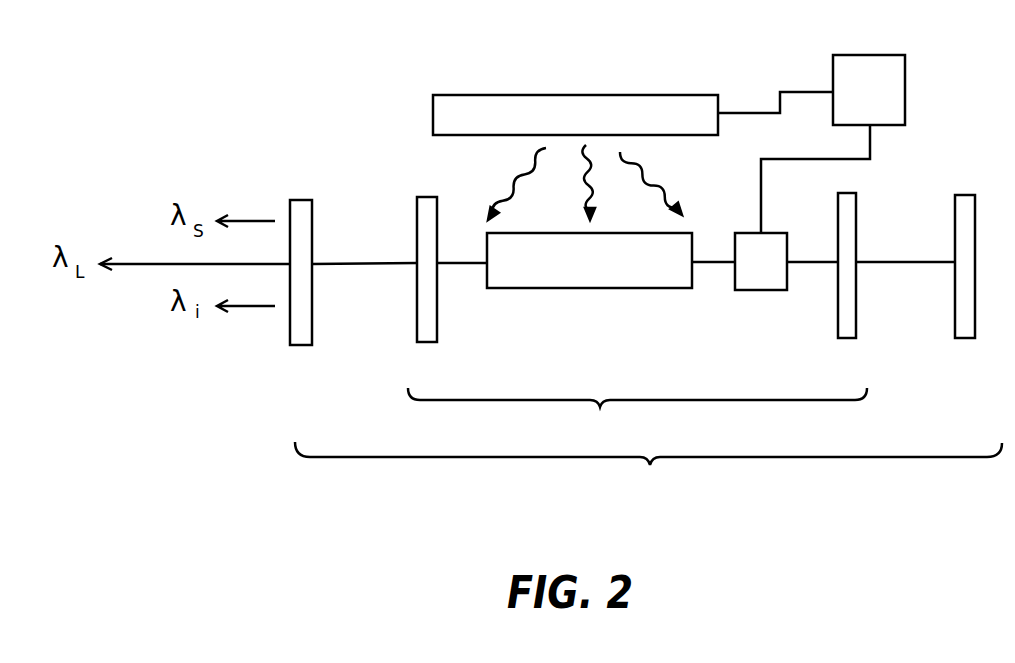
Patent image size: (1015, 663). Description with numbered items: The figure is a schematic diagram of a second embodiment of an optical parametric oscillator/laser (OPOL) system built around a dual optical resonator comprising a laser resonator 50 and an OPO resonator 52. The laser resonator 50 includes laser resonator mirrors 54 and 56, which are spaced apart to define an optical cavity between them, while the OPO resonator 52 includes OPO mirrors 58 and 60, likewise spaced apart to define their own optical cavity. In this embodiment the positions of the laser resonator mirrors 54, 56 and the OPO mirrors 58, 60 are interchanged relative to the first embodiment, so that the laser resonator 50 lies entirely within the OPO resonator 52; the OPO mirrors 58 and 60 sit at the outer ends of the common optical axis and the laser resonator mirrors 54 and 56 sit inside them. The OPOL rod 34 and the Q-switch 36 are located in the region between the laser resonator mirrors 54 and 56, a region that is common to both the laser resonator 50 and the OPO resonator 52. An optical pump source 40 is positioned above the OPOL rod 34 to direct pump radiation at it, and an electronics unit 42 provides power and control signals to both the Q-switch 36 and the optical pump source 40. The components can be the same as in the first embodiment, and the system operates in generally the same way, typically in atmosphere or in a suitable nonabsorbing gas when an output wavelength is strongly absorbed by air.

The OPOL rod 34 is at (596, 288).
The Q-switch 36 is at (766, 290).
The optical pump source 40 is at (562, 95).
The electronics unit 42 is at (888, 55).
The laser resonator 50 is at (637, 416).
The OPO resonator 52 is at (648, 475).
The laser resonator mirror 54 is at (428, 197).
The laser resonator mirror 56 is at (852, 193).
The OPO mirror 58 is at (292, 200).
The OPO mirror 60 is at (966, 195).